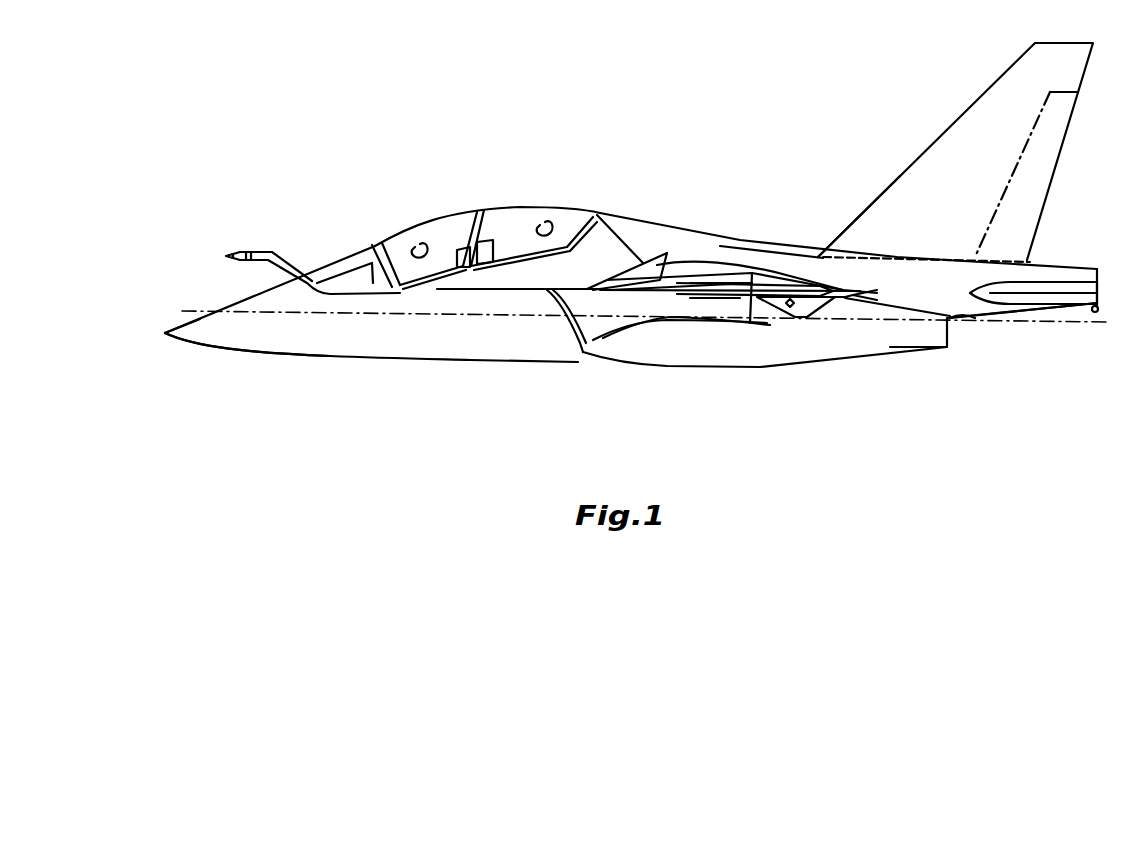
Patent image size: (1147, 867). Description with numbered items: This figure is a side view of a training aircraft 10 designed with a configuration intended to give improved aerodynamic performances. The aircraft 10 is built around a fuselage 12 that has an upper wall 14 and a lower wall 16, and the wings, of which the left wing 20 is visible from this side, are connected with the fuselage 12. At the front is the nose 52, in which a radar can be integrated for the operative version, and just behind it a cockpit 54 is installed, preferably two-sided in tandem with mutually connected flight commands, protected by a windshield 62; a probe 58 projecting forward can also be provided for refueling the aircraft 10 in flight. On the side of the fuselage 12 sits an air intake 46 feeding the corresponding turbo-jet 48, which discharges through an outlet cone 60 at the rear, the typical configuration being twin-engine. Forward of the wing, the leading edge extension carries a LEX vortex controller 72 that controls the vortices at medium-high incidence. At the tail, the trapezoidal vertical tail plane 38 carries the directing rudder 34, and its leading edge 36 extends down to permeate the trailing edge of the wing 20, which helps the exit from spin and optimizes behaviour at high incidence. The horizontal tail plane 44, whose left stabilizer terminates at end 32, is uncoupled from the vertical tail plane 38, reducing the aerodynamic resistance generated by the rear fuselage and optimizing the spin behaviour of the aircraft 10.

The aircraft 10 is at (345, 190).
The fuselage 12 is at (486, 365).
The upper wall 14 is at (656, 226).
The lower wall 16 is at (417, 347).
The left wing 20 is at (655, 292).
The end of left horizontal stabilizer 32 is at (1070, 308).
The directing rudder 34 is at (1060, 117).
The leading edge of the vertical empennage 36 is at (878, 193).
The vertical tail plane 38 is at (995, 110).
The horizontal tail plane 44 is at (1050, 288).
The air intake 46 is at (565, 338).
The turbo-jet 48 is at (797, 281).
The nose 52 is at (185, 336).
The cockpit 54 is at (447, 230).
The probe 58 is at (250, 252).
The outlet cone 60 is at (958, 322).
The windshield 62 is at (352, 265).
The LEX vortex controller 72 is at (640, 265).